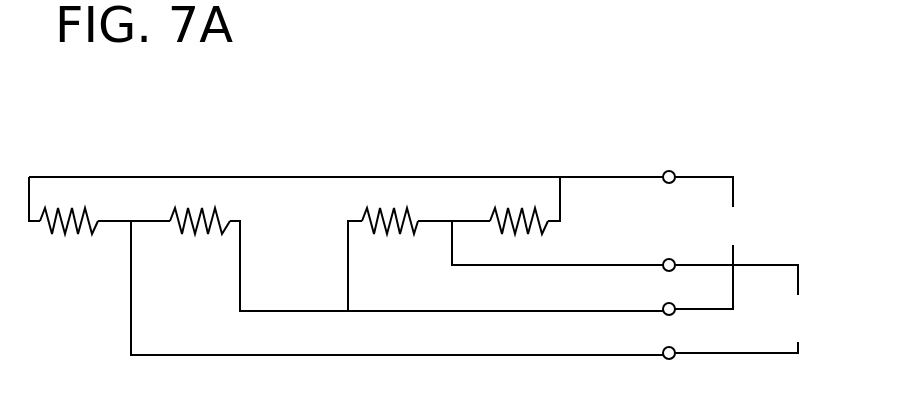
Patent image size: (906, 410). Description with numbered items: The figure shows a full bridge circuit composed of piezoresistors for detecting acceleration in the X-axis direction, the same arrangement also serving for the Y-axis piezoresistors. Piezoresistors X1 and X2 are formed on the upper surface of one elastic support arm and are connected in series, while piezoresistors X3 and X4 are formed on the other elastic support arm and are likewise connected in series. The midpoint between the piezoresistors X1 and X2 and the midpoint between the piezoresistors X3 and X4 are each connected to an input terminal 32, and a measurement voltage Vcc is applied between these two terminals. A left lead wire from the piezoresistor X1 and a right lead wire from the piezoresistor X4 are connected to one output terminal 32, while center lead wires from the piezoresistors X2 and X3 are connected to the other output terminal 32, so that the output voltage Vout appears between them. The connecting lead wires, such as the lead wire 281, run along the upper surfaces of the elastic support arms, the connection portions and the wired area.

The Y-axis lead wire 281 is at (276, 177).
The terminal 32 is at (664, 173).
The piezoresistor X1 is at (62, 240).
The piezoresistor X2 is at (186, 238).
The piezoresistor X3 is at (402, 238).
The piezoresistor X4 is at (561, 233).
The output voltage Vout is at (721, 243).
The measurement voltage Vcc is at (746, 309).